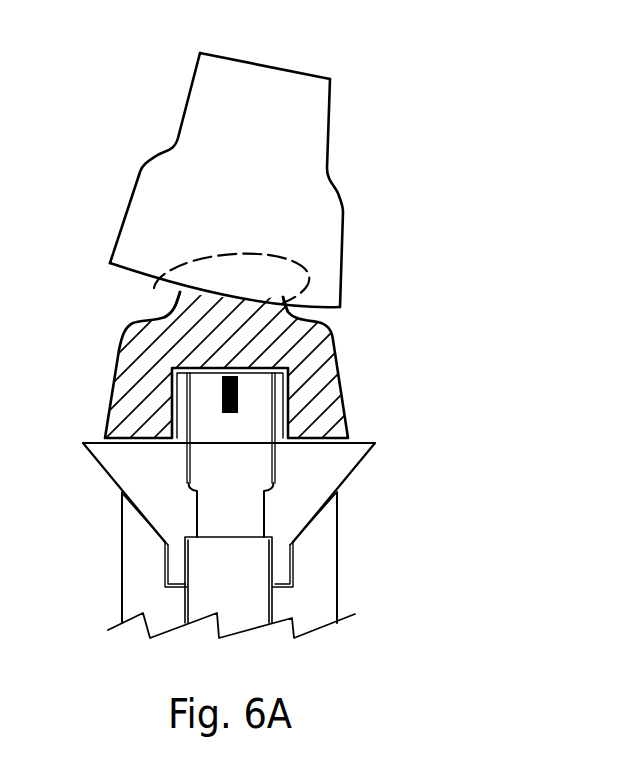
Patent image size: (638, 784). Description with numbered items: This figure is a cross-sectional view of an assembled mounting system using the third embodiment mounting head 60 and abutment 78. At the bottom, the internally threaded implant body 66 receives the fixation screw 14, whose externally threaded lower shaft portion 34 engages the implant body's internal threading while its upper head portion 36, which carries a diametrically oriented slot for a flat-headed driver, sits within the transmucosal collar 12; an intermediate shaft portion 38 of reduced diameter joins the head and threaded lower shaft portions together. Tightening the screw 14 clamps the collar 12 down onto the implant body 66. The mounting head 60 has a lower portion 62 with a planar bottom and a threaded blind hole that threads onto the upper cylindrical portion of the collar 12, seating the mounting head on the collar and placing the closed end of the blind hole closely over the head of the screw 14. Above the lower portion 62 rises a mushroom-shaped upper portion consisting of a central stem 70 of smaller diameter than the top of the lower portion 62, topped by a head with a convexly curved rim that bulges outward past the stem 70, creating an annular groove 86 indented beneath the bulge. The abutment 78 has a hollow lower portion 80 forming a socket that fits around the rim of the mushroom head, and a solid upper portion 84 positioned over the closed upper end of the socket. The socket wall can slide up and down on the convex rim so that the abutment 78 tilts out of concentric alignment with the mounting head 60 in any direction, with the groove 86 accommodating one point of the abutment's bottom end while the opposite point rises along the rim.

The transmucosal collar 12 is at (263, 515).
The fixation screw 14 is at (235, 498).
The threaded lower shaft portion 34 is at (198, 573).
The upper head portion 36 is at (202, 417).
The intermediate shaft portion 38 is at (240, 520).
The mounting head 60 is at (272, 340).
The lower portion 62 is at (330, 407).
The implant body 66 is at (313, 578).
The central stem 70 is at (265, 310).
The abutment 78 is at (259, 160).
The lower portion 80 is at (337, 247).
The solid upper portion 84 is at (272, 84).
The annular groove 86 is at (175, 302).